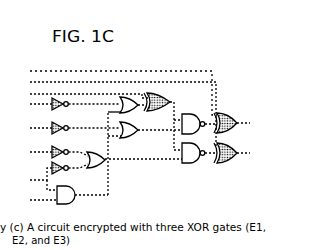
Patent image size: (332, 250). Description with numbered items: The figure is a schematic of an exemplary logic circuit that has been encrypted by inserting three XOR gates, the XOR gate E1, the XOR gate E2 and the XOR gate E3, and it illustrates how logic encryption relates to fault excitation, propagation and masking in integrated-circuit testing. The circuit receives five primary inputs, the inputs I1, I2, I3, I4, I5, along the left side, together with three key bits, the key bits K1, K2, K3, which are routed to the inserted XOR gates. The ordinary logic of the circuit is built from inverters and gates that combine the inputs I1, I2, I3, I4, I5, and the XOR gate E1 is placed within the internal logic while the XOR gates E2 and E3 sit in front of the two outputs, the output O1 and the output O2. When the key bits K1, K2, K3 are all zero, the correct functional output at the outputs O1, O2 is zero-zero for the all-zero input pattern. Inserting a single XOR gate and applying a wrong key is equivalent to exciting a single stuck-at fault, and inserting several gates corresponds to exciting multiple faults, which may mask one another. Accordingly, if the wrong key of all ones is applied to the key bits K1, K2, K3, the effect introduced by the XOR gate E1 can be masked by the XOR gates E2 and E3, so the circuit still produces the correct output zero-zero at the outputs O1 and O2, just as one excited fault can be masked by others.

The key bit K1 is at (118, 91).
The key bit K2 is at (118, 112).
The key bit K3 is at (84, 94).
The input I1 is at (35, 105).
The input I2 is at (35, 129).
The input I3 is at (35, 153).
The input I4 is at (38, 179).
The input I5 is at (38, 201).
The output O1 is at (249, 124).
The output O2 is at (250, 154).
The XOR gate E1 is at (157, 102).
The XOR gate E2 is at (225, 123).
The XOR gate E3 is at (225, 153).